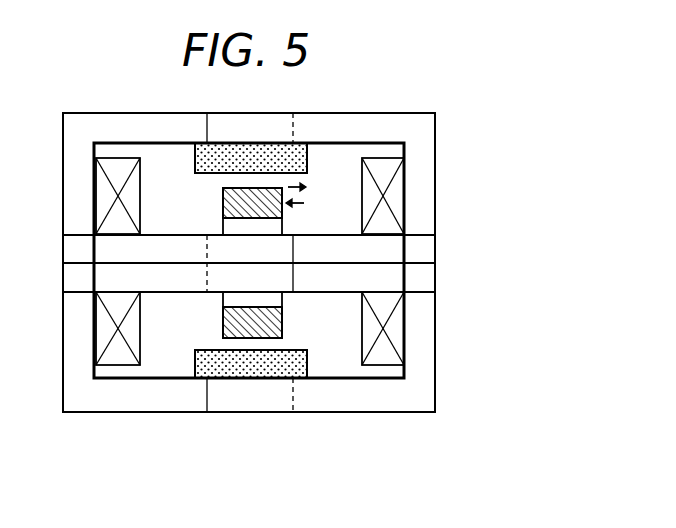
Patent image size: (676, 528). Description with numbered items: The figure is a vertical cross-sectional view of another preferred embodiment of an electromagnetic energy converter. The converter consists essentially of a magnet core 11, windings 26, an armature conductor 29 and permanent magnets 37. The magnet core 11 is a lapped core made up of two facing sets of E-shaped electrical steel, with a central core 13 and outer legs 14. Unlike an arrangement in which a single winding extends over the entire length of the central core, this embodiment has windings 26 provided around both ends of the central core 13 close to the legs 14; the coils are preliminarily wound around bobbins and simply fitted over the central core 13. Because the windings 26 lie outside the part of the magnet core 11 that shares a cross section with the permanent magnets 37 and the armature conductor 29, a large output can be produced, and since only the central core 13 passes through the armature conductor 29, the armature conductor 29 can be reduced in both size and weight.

The magnet core 11 is at (408, 113).
The central core 13 is at (103, 282).
The legs 14 is at (76, 180).
The winding 26 is at (100, 200).
The armature conductor 29 is at (283, 325).
The permanent magnets 37 is at (308, 160).